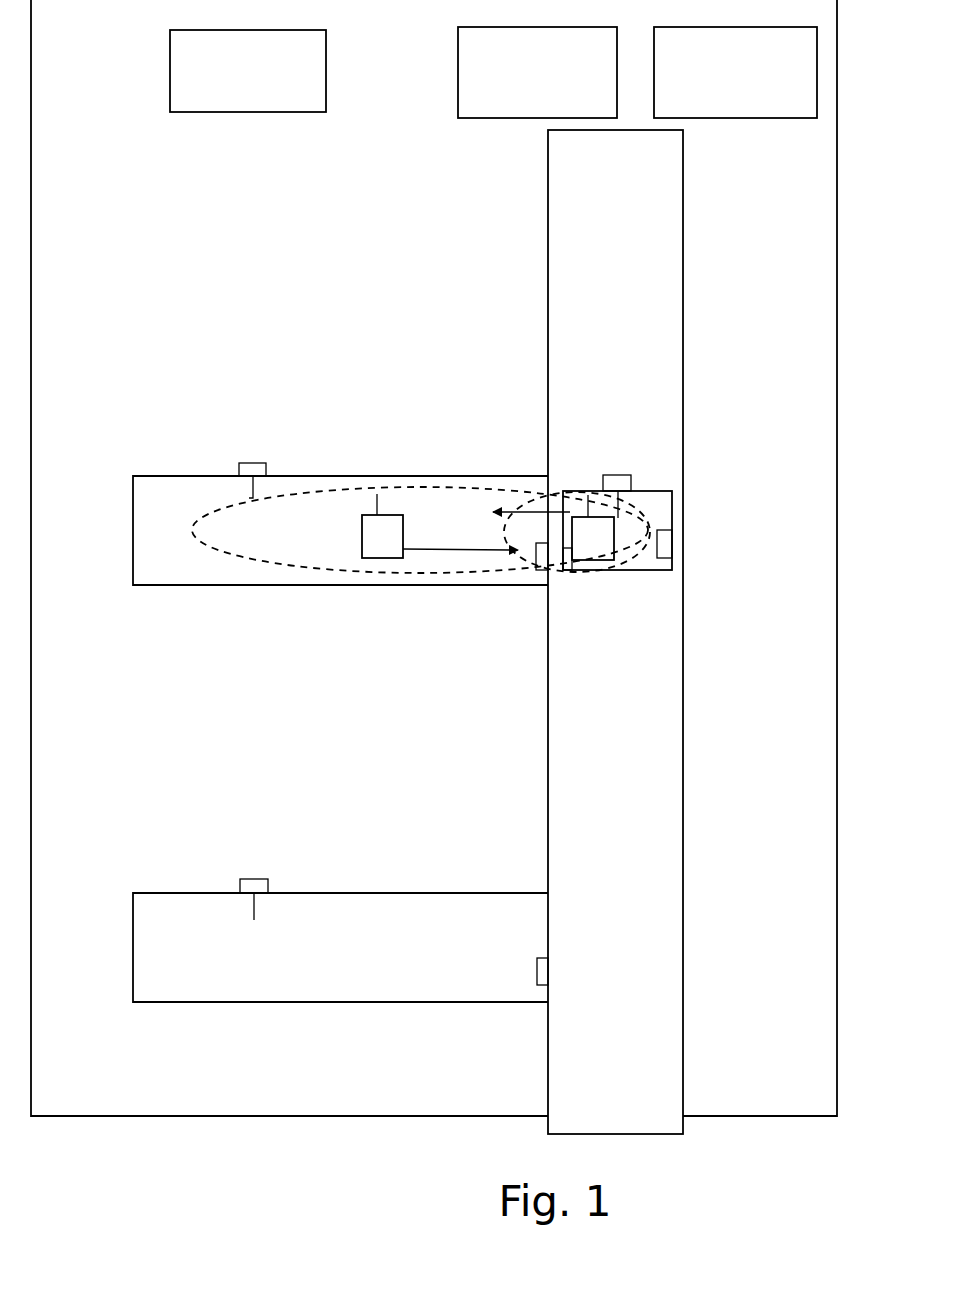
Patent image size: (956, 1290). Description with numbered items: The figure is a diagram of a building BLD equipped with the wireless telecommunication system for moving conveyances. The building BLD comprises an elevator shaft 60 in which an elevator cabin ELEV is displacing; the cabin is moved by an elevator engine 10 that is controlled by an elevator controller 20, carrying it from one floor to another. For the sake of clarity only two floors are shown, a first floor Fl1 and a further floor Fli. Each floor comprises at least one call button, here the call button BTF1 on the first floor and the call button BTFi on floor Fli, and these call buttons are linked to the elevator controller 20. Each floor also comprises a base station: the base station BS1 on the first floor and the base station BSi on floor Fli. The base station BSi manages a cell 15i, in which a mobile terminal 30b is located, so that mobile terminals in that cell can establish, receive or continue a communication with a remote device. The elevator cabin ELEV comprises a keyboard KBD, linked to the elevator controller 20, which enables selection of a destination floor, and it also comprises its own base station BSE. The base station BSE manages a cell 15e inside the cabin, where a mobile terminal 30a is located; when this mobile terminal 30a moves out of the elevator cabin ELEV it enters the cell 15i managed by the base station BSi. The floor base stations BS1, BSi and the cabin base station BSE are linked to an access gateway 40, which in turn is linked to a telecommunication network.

The building BLD is at (837, 627).
The access gateway 40 is at (326, 92).
The elevator engine 10 is at (458, 52).
The elevator controller 20 is at (810, 106).
The elevator shaft 60 is at (683, 828).
The floor Fli is at (373, 476).
The base station BSi is at (266, 463).
The cell 15i is at (420, 530).
The mobile terminal 30b is at (382, 526).
The call button BTFi is at (538, 573).
The elevator cabin ELEV is at (672, 498).
The base station BSE is at (631, 476).
The mobile terminal 30a is at (593, 527).
The keyboard KBD is at (672, 546).
The cell 15e is at (567, 557).
The floor Fl1 is at (375, 893).
The base station BS1 is at (268, 879).
The call button BTF1 is at (540, 987).